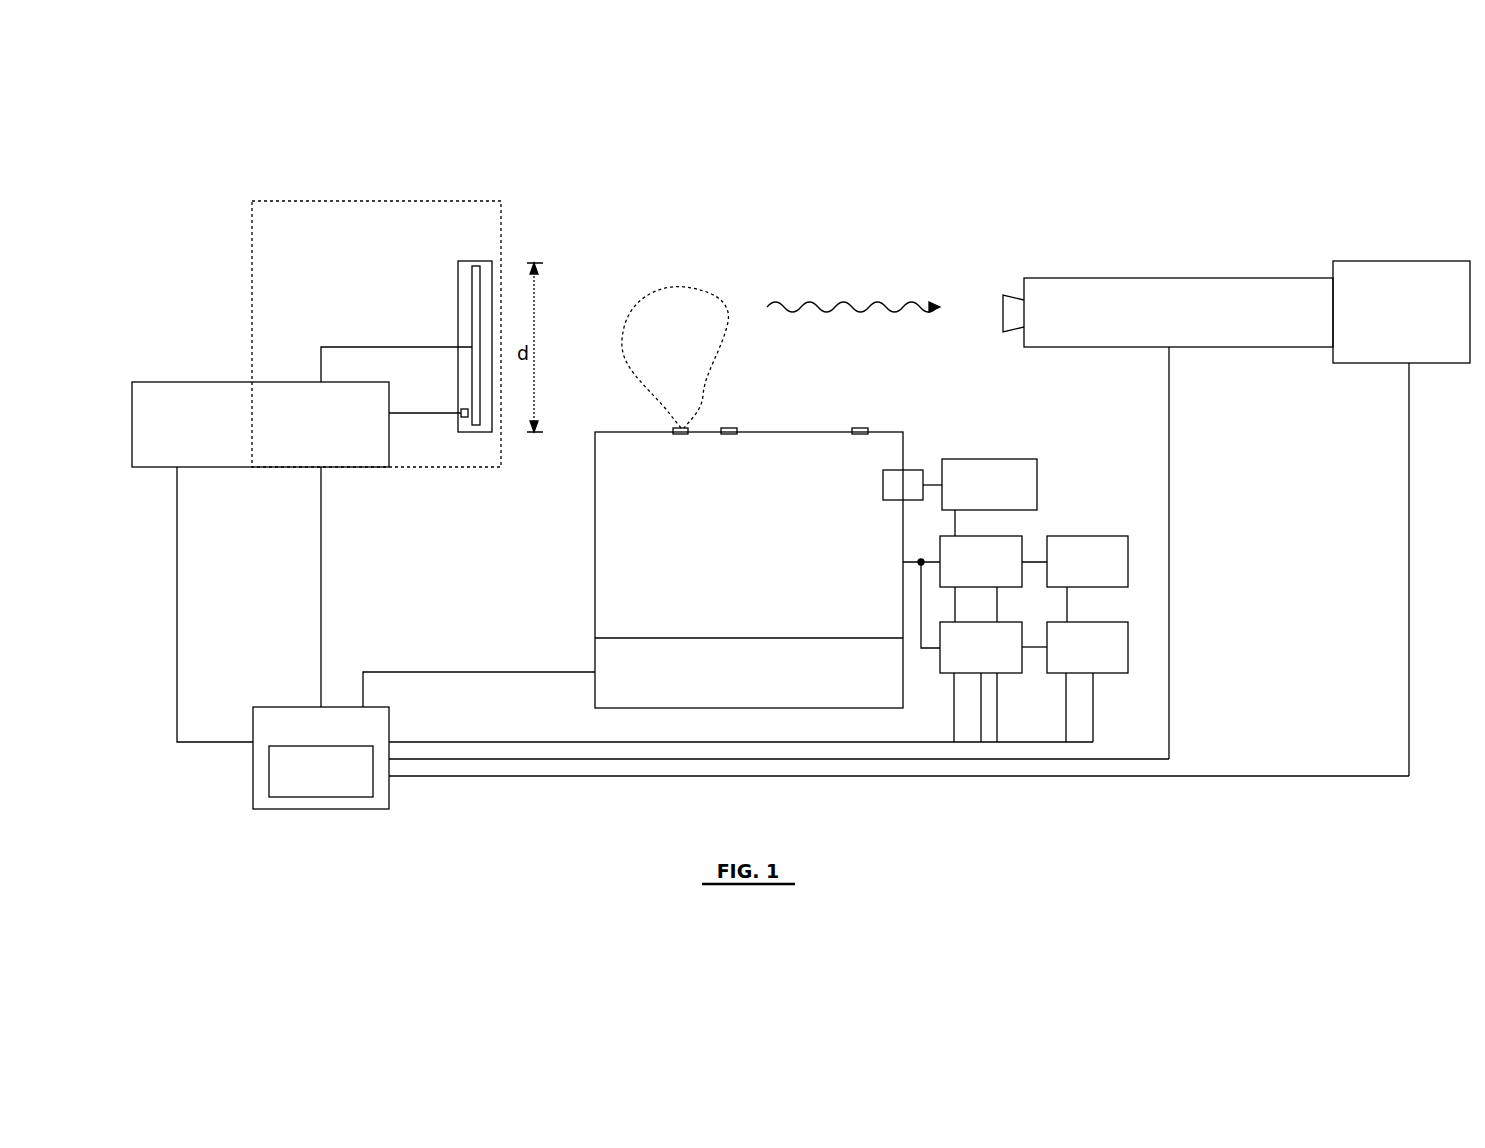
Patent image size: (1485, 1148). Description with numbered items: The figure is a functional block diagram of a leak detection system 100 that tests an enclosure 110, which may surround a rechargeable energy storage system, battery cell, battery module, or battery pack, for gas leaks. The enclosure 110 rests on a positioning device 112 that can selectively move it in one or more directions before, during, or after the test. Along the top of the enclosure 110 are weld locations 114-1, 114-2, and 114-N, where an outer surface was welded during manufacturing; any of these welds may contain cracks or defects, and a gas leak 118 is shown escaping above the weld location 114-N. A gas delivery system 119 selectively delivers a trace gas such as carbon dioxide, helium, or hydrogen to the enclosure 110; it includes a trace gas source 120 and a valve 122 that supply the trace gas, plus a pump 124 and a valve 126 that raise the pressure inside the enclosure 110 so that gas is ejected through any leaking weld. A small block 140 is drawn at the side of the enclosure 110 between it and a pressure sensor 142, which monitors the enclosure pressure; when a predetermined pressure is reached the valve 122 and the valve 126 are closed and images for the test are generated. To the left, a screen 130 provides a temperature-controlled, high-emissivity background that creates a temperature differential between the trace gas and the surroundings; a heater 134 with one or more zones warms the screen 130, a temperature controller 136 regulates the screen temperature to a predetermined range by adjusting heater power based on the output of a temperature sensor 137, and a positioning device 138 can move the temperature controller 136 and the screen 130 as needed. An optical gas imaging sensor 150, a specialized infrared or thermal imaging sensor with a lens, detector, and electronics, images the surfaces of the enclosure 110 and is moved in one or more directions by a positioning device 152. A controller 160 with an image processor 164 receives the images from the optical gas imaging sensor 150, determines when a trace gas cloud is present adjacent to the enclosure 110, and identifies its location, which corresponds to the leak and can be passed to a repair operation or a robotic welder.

The leak detection system 100 is at (576, 173).
The enclosure 110 is at (595, 521).
The positioning device 112 is at (595, 655).
The weld location 114-N is at (676, 428).
The weld location 114-2 is at (733, 428).
The weld location 114-1 is at (860, 428).
The gas leak 118 is at (632, 322).
The gas delivery system 119 is at (1078, 485).
The trace gas source 120 is at (1080, 536).
The valve 122 is at (978, 536).
The pump 124 is at (1085, 622).
The valve 126 is at (940, 665).
The screen 130 is at (458, 270).
The heater 134 is at (472, 320).
The temperature controller 136 is at (283, 382).
The temperature sensor 137 is at (461, 418).
The positioning device 138 is at (150, 467).
The valve 140 is at (913, 470).
The pressure sensor 142 is at (988, 459).
The optical gas imaging sensor 150 is at (1198, 278).
The positioning device 152 is at (1358, 363).
The controller 160 is at (265, 809).
The image processor 164 is at (328, 797).